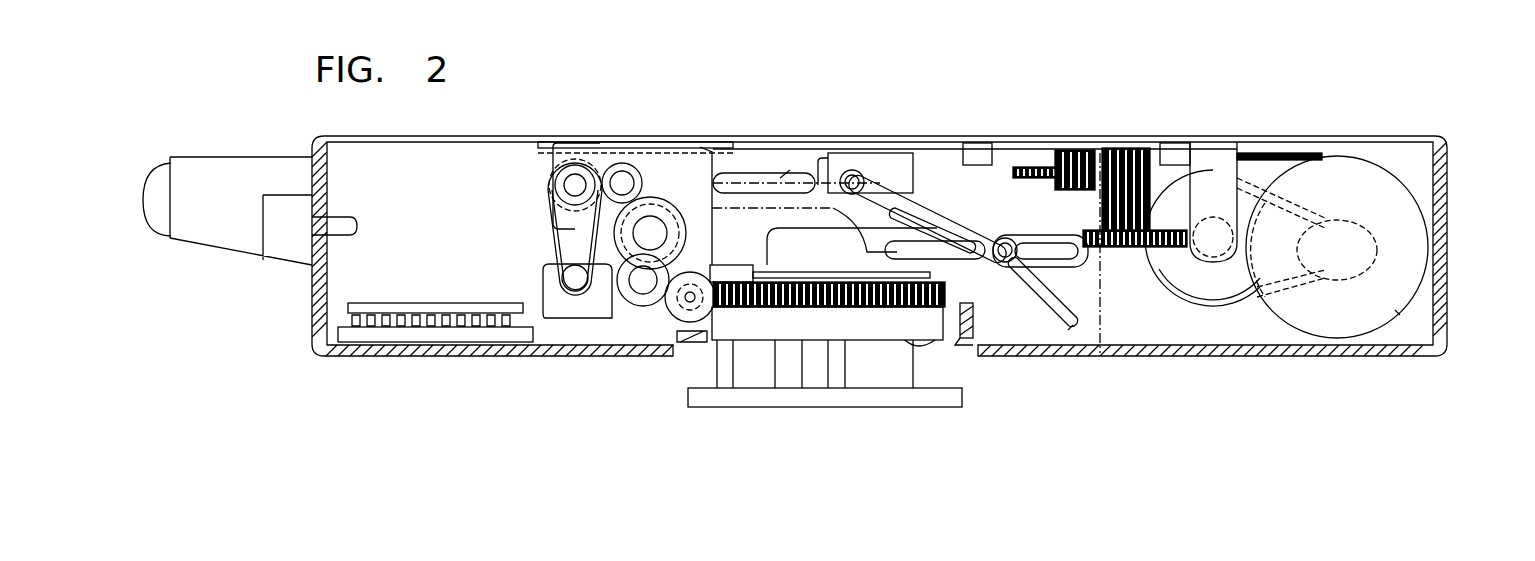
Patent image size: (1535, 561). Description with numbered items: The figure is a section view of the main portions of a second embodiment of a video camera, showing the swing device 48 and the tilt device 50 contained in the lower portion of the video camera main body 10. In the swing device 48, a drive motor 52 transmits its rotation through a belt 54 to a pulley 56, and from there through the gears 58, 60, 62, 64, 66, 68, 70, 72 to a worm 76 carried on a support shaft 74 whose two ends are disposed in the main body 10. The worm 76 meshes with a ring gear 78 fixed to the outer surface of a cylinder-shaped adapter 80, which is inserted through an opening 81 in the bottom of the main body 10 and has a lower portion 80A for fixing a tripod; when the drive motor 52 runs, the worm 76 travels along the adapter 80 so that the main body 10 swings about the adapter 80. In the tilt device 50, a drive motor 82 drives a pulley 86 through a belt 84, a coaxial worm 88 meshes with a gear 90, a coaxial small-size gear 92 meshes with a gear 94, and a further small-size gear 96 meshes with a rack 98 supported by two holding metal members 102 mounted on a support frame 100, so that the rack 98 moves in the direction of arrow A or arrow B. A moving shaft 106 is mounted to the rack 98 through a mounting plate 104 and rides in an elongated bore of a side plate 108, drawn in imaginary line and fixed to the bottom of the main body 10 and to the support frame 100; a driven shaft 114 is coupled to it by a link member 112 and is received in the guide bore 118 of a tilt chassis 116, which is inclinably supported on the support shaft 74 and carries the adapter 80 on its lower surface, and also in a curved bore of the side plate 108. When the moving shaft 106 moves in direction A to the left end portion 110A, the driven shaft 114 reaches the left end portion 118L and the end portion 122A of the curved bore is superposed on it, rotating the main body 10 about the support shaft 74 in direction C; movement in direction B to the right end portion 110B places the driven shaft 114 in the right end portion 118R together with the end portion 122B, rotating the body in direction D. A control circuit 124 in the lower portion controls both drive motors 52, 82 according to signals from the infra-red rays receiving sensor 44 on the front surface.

The video camera main body 10 is at (1447, 172).
The infra-red rays receiving sensor 44 is at (148, 243).
The swing device 48 is at (662, 142).
The tilt device 50 is at (1388, 167).
The drive motor 52 is at (561, 280).
The belt 54 is at (550, 243).
The pulley 56 is at (549, 196).
The gear 58 is at (549, 170).
The gear 60 is at (580, 134).
The gear 62 is at (620, 136).
The gear 64 is at (662, 200).
The gear 66 is at (550, 246).
The gear 68 is at (608, 320).
The gear 70 is at (632, 307).
The gear 72 is at (712, 258).
The support shaft 74 is at (668, 323).
The worm 76 is at (690, 343).
The ring gear 78 is at (745, 308).
The adapter 80 is at (773, 350).
The lower portion 80A is at (813, 407).
The opening 81 is at (965, 363).
The drive motor 82 is at (1400, 315).
The belt 84 is at (1232, 300).
The pulley 86 is at (1233, 305).
The worm 88 is at (1213, 258).
The gear 90 is at (1175, 252).
The small-size gear 92 is at (1127, 260).
The gear 94 is at (1107, 150).
The small-size gear 96 is at (1073, 153).
The rack 98 is at (1030, 153).
The support frame 100 is at (942, 138).
The holding metal member 102 is at (983, 147).
The mounting plate 104 is at (885, 163).
The moving shaft 106 is at (855, 170).
The side plate 108 is at (790, 170).
The left end portion 110A is at (796, 168).
The right end portion 110B is at (1028, 185).
The link member 112 is at (968, 282).
The driven shaft 114 is at (1007, 263).
The tilt chassis 116 is at (845, 258).
The elongated bore 118 is at (955, 300).
The left end portion 118L is at (885, 246).
The right end portion 118R is at (1087, 330).
The end portion 122A is at (950, 208).
The end portion 122B is at (1068, 330).
The control circuit 124 is at (407, 342).
The arrow A is at (703, 105).
The arrow B is at (777, 121).
The arrow C is at (1330, 480).
The arrow D is at (1323, 43).